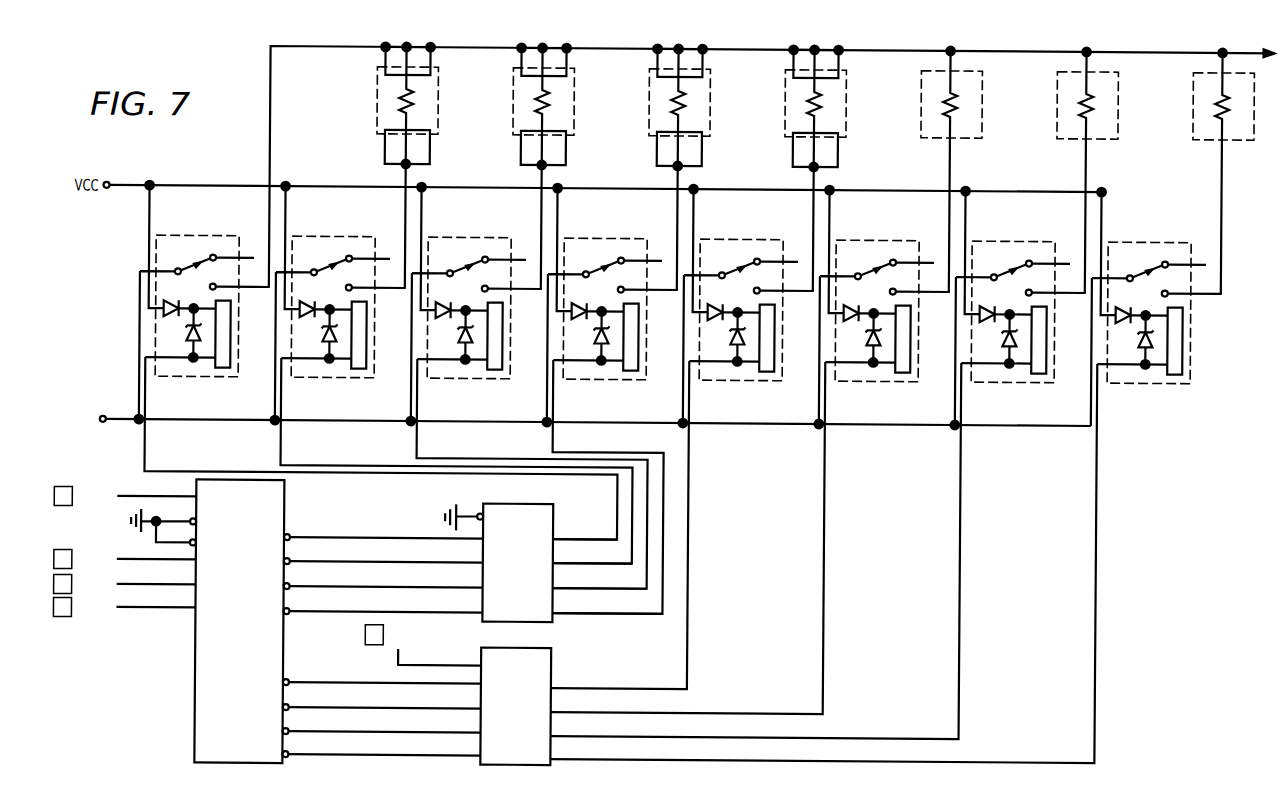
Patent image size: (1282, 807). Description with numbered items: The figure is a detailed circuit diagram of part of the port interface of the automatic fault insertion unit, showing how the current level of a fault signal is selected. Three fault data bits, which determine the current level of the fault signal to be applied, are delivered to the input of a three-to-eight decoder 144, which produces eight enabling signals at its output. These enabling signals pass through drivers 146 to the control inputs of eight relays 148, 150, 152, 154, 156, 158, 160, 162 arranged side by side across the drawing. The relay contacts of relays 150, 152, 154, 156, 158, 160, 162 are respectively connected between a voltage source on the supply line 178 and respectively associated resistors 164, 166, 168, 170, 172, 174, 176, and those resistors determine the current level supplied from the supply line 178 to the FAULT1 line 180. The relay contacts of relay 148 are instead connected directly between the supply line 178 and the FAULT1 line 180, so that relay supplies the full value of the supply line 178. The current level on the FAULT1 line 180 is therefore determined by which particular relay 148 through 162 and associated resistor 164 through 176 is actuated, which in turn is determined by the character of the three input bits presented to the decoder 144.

The three-to-eight decoder 144 is at (196, 707).
The drivers 146 is at (554, 620).
The relay 148 is at (198, 236).
The relay 150 is at (334, 236).
The relay 152 is at (470, 236).
The relay 154 is at (606, 236).
The relay 156 is at (742, 236).
The relay 158 is at (878, 236).
The relay 160 is at (1014, 236).
The relay 162 is at (1150, 236).
The resistor 164 is at (376, 102).
The resistor 166 is at (512, 102).
The resistor 168 is at (648, 102).
The resistor 170 is at (784, 102).
The resistor 172 is at (920, 102).
The resistor 174 is at (1056, 102).
The resistor 176 is at (1192, 102).
The supply line 178 is at (113, 423).
The FAULT1 line 180 is at (268, 93).